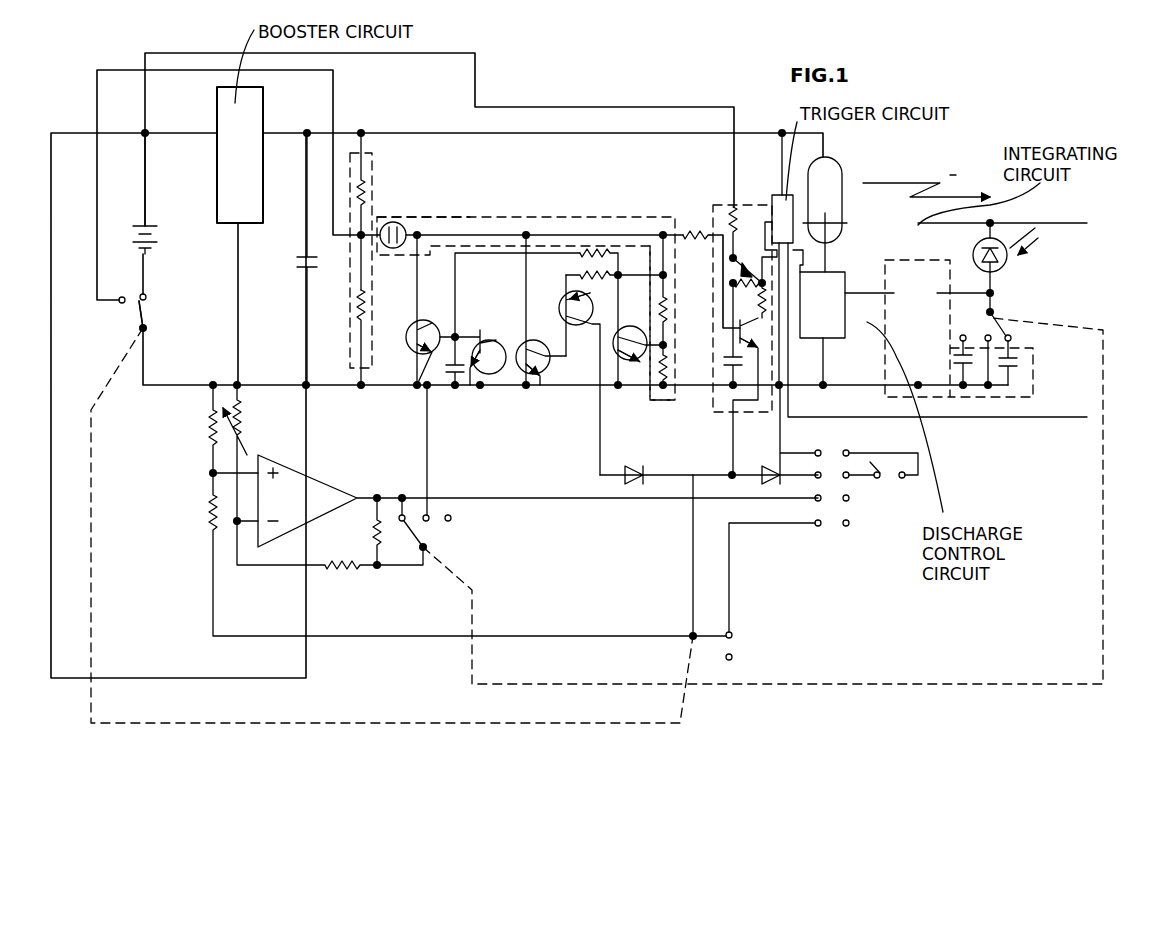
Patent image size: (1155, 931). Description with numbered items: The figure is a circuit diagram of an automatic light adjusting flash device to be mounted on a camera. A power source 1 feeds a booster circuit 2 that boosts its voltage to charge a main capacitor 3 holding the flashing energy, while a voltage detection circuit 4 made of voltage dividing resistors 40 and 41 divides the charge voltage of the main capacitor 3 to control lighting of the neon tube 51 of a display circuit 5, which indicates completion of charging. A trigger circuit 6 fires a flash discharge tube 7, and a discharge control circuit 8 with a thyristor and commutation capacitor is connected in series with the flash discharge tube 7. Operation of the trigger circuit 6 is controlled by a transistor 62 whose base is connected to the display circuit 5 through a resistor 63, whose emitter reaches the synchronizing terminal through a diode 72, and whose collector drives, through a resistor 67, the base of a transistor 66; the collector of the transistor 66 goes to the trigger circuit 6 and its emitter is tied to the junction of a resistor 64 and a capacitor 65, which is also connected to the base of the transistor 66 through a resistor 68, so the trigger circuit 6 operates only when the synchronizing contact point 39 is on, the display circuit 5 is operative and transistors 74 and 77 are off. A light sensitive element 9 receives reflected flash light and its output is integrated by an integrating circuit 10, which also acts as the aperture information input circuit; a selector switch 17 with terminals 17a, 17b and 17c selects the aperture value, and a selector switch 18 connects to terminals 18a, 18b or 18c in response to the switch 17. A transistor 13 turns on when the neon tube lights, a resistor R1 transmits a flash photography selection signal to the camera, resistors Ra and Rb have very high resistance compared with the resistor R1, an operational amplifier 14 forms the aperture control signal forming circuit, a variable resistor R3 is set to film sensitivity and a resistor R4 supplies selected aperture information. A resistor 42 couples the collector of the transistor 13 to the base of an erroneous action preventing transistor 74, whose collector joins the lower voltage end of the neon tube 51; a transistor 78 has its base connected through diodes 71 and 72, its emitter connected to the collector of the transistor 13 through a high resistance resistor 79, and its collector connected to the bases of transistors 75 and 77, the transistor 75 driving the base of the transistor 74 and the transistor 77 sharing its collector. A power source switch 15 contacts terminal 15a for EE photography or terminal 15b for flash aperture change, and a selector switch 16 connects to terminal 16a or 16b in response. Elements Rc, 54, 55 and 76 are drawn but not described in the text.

The power source 1 is at (150, 234).
The booster circuit 2 is at (263, 103).
The main capacitor 3 is at (295, 262).
The voltage detection circuit 4 is at (373, 160).
The voltage dividing resistor 40 is at (368, 192).
The voltage dividing resistor 41 is at (353, 312).
The neon tube 51 is at (404, 226).
The display circuit 5 is at (475, 217).
The power source switch 15 is at (146, 314).
The terminal 15a is at (120, 304).
The terminal 15b is at (147, 296).
The resistor Ra is at (207, 428).
The resistor Rb is at (207, 526).
The variable resistor R3 is at (243, 424).
The operational amplifier 14 is at (320, 478).
The resistor R4 is at (372, 540).
The resistor Rc is at (336, 570).
The selector switch 18 is at (428, 548).
The terminal 18a is at (399, 514).
The terminal 18b is at (429, 514).
The terminal 18c is at (452, 518).
The erroneous action preventing transistor 74 is at (410, 328).
The transistor 75 is at (482, 344).
The capacitor 76 is at (452, 374).
The transistor 77 is at (520, 348).
The transistor 78 is at (562, 300).
The resistor 42 is at (592, 250).
The high resistance resistor 79 is at (598, 270).
The transistor 13 is at (626, 332).
The resistor R1 is at (674, 335).
The resistor network 54 is at (670, 305).
The resistor 55 is at (658, 370).
The resistor 63 is at (693, 233).
The resistor 64 is at (737, 218).
The trigger circuit 6 is at (775, 196).
The transistor 66 is at (770, 265).
The resistor 68 is at (762, 290).
The transistor 62 is at (765, 326).
The capacitor 65 is at (728, 360).
The flash discharge tube 7 is at (826, 176).
The discharge control circuit 8 is at (840, 323).
The resistor 67 is at (815, 330).
The light sensitive element 9 is at (974, 250).
The selector switch 17 is at (998, 322).
The terminal 17a is at (1012, 338).
The terminal 17b is at (986, 345).
The terminal 17c is at (960, 342).
The integrating circuit 10 is at (1033, 376).
The diode 71 is at (630, 466).
The diode 72 is at (766, 466).
The synchronizing contact point 39 is at (884, 480).
The selector switch 16 is at (692, 632).
The terminal 16a is at (733, 658).
The terminal 16b is at (733, 635).